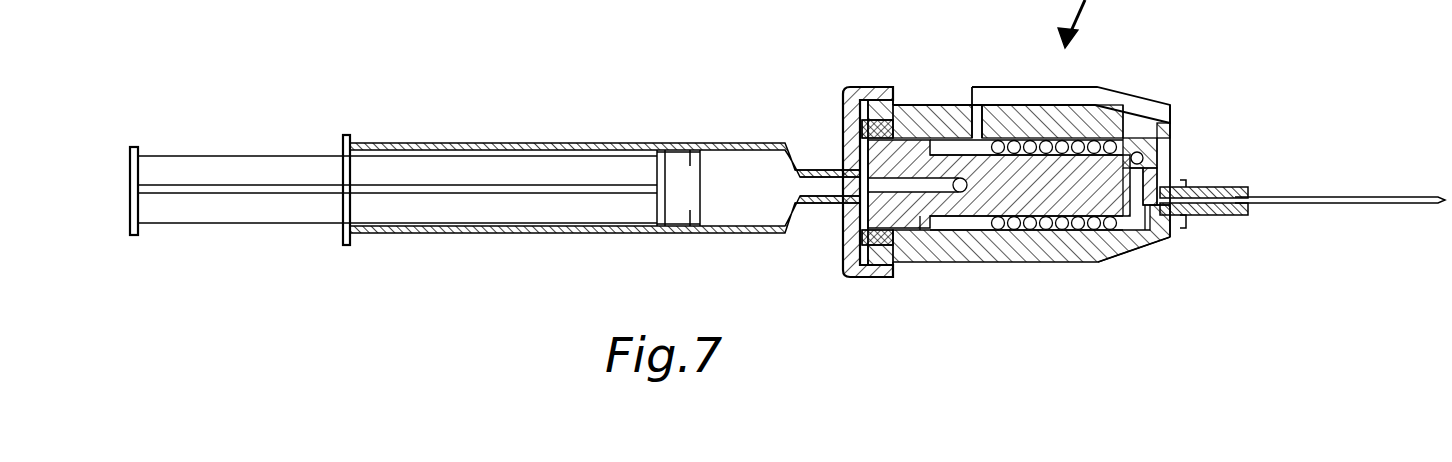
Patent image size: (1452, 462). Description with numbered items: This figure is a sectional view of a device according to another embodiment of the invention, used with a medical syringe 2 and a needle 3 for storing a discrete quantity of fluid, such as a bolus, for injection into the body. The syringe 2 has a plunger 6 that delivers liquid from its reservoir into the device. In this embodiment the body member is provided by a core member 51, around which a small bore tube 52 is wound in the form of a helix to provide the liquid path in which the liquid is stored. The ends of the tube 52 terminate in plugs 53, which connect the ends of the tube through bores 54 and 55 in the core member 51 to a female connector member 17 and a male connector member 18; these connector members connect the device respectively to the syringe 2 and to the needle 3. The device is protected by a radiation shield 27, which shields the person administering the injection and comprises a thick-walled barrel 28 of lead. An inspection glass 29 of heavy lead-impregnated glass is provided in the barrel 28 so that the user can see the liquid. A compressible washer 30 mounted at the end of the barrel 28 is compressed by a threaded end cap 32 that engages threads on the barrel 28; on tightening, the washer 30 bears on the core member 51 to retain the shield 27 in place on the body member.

The medical syringe 2 is at (568, 223).
The needle 3 is at (1323, 200).
The plunger 6 is at (257, 165).
The female connector member 17 is at (830, 205).
The male connector member 18 is at (1202, 190).
The radiation shield 27 is at (1073, 250).
The barrel 28 is at (1032, 252).
The inspection glass 29 is at (1070, 90).
The compressible washer 30 is at (906, 108).
The end cap 32 is at (853, 92).
The core member 51 is at (980, 168).
The small bore tube 52 is at (1068, 135).
The plugs 53 is at (1173, 122).
The bore 54 is at (1145, 178).
The bore 55 is at (926, 222).